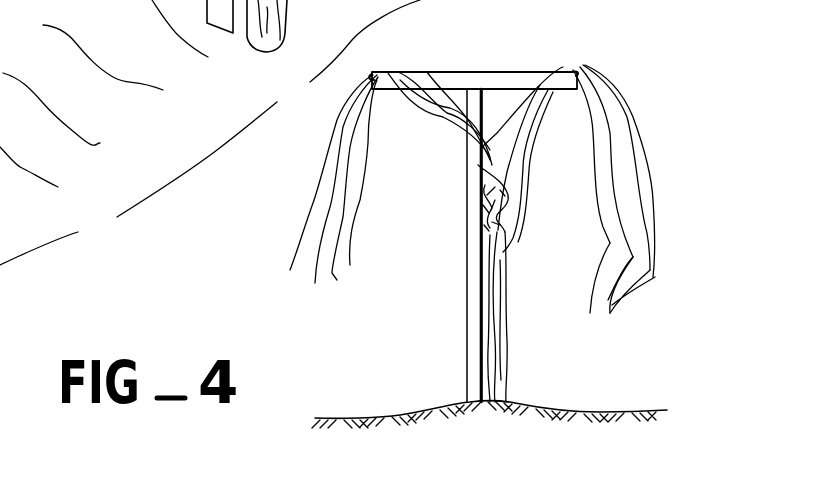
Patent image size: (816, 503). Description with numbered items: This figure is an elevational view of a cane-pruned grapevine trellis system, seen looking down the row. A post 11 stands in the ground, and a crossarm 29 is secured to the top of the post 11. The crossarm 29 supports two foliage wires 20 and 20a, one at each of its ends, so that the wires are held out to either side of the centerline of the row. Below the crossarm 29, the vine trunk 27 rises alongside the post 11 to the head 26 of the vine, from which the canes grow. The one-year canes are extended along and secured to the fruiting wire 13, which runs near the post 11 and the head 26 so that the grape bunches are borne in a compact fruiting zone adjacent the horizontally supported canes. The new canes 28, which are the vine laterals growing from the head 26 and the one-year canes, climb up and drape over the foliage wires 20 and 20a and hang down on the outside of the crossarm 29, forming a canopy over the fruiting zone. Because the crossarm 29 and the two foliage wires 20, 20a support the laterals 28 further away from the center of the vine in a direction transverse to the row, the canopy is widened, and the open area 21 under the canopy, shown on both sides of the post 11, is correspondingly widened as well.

The post 11 is at (467, 317).
The fruiting wire 13 is at (482, 147).
The foliage wire 20 is at (380, 70).
The foliage wire 20a is at (563, 63).
The open area 21 is at (417, 217).
The head 26 is at (507, 246).
The vine trunk 27 is at (500, 347).
The new canes 28 is at (320, 188).
The crossarm 29 is at (483, 73).